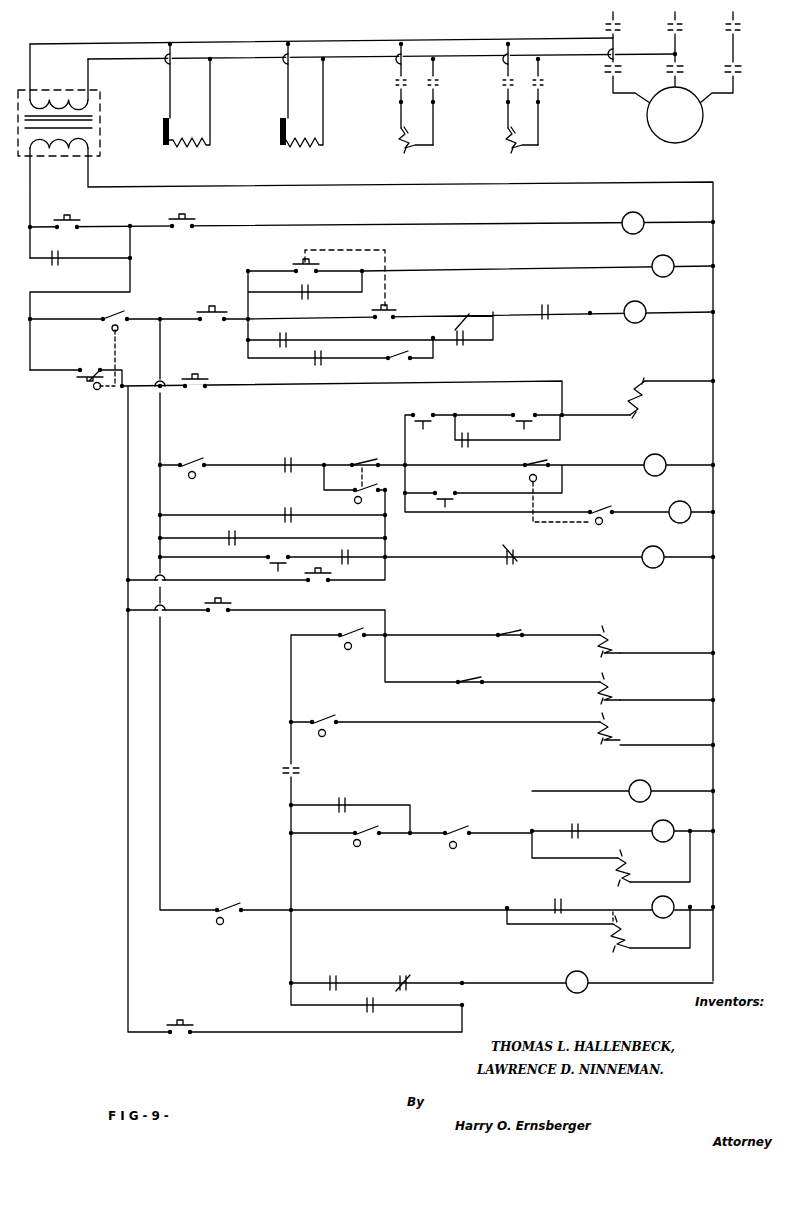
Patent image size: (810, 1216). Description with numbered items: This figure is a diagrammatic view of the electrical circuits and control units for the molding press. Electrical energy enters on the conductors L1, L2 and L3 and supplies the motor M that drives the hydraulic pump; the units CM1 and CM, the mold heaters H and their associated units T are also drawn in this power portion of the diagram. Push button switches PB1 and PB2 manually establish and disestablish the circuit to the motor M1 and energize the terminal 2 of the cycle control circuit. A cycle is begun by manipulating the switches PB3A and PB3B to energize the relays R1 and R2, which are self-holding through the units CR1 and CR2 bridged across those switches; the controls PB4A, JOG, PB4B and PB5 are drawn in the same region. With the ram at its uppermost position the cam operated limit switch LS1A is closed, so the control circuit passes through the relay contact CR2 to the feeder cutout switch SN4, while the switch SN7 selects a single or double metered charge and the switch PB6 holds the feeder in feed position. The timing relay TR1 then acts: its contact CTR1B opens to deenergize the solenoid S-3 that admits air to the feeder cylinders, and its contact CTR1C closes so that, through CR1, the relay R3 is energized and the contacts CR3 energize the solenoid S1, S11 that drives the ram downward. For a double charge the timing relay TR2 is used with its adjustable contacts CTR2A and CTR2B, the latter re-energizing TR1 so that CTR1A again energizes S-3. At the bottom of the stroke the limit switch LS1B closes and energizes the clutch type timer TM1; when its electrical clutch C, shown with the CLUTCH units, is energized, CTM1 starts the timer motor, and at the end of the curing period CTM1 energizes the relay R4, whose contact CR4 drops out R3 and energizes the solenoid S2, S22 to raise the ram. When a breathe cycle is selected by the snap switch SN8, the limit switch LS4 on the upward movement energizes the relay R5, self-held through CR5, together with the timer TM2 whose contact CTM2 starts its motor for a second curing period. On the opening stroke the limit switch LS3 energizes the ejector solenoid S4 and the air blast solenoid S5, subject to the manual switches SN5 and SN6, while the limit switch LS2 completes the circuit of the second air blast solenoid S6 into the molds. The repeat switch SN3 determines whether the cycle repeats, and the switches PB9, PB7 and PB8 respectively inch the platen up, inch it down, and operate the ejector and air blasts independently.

The control transformer / contactor coil contact CM is at (59, 177).
The thermostat T is at (230, 94).
The heaters H is at (306, 160).
The relay contact CR3 is at (380, 294).
The solenoid S1 is at (407, 126).
The solenoid S11 is at (446, 108).
The relay contact CR4 is at (401, 418).
The solenoid S2 is at (513, 126).
The solenoid S22 is at (551, 108).
The conductor L1 is at (628, 57).
The conductor L2 is at (684, 50).
The conductor L3 is at (729, 57).
The motor contactor contacts CM1 is at (686, 76).
The motor M is at (675, 115).
The push button switch PB1 is at (77, 217).
The terminal 2 is at (136, 242).
The push button switch PB2 is at (188, 216).
The motor circuit unit M1 is at (633, 223).
The switch PB3A is at (330, 275).
The relay R1 is at (663, 266).
The relay contact CR1 is at (447, 420).
The switch PB3B is at (400, 307).
The relay R2 is at (635, 312).
The run pushbutton contact PB4A is at (112, 311).
The jog selector JOG is at (126, 354).
The jog pushbutton contact PB4B is at (77, 382).
The stop cycle pushbutton PB5 is at (212, 304).
The feed switch PB6 is at (199, 388).
The relay contact CR2 is at (293, 398).
The timer contact unit CTM1 is at (426, 670).
The repeat switch SN3 is at (396, 363).
The timing relay contact CTR1B is at (420, 412).
The time delay contact CTR2A is at (522, 412).
The timing relay contact CTR1A is at (489, 437).
The solenoid S-3 is at (652, 398).
The limit switch LS1A is at (188, 461).
The feeder cutout switch SN4 is at (372, 481).
The charge selector switch SN7 is at (562, 487).
The timing relay TR1 is at (655, 465).
The time delay contact CTR2B is at (444, 492).
The timing relay TR2 is at (680, 512).
The relay contact CR5 is at (350, 744).
The timing relay contact CTR1C is at (282, 556).
The relay R3 is at (653, 557).
The inch-down switch PB7 is at (322, 576).
The ejector and air blast switch PB8 is at (249, 608).
The limit switch LS3 is at (348, 633).
The manual switch SN5 is at (515, 632).
The solenoid S4 is at (621, 641).
The manual switch SN6 is at (474, 679).
The solenoid S5 is at (621, 688).
The limit switch LS2 is at (362, 724).
The solenoid S6 is at (621, 728).
The limit switch LS4 is at (365, 846).
The snap switch SN8 is at (454, 831).
The relay R5 is at (640, 791).
The timer contact unit CTM2 is at (475, 917).
The timer TM2 is at (663, 831).
The timer clutch solenoid CLUTCH is at (643, 901).
The electrical clutch C is at (602, 928).
The limit switch LS1B is at (227, 923).
The timer TM1 is at (663, 907).
The relay R4 is at (577, 982).
The inch-up switch PB9 is at (188, 1038).